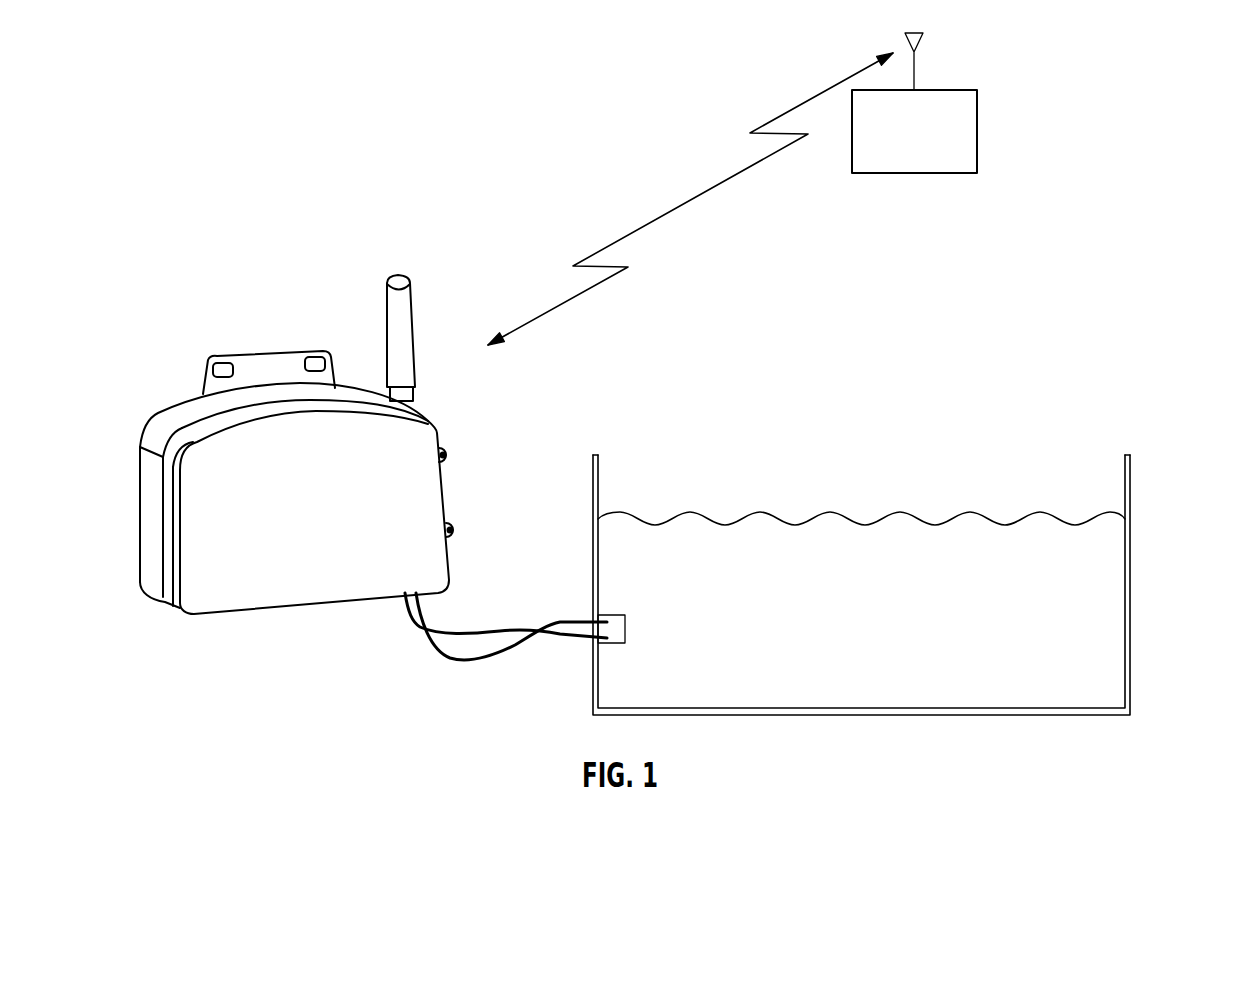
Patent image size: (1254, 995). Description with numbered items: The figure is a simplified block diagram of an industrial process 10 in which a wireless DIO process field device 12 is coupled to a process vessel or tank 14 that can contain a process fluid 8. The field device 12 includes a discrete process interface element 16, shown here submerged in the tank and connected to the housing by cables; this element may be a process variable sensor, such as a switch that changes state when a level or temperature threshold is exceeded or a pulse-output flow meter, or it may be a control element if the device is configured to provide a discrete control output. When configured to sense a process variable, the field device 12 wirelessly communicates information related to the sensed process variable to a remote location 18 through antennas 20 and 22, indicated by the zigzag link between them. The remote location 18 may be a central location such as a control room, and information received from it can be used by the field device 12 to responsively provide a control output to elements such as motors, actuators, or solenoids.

The process fluid 8 is at (1108, 550).
The industrial process 10 is at (583, 203).
The wireless DIO process field device 12 is at (230, 588).
The process vessel or tank 14 is at (1131, 653).
The discrete process interface element 16 is at (625, 632).
The remote location 18 is at (977, 115).
The antenna 20 is at (393, 303).
The antenna 22 is at (925, 47).